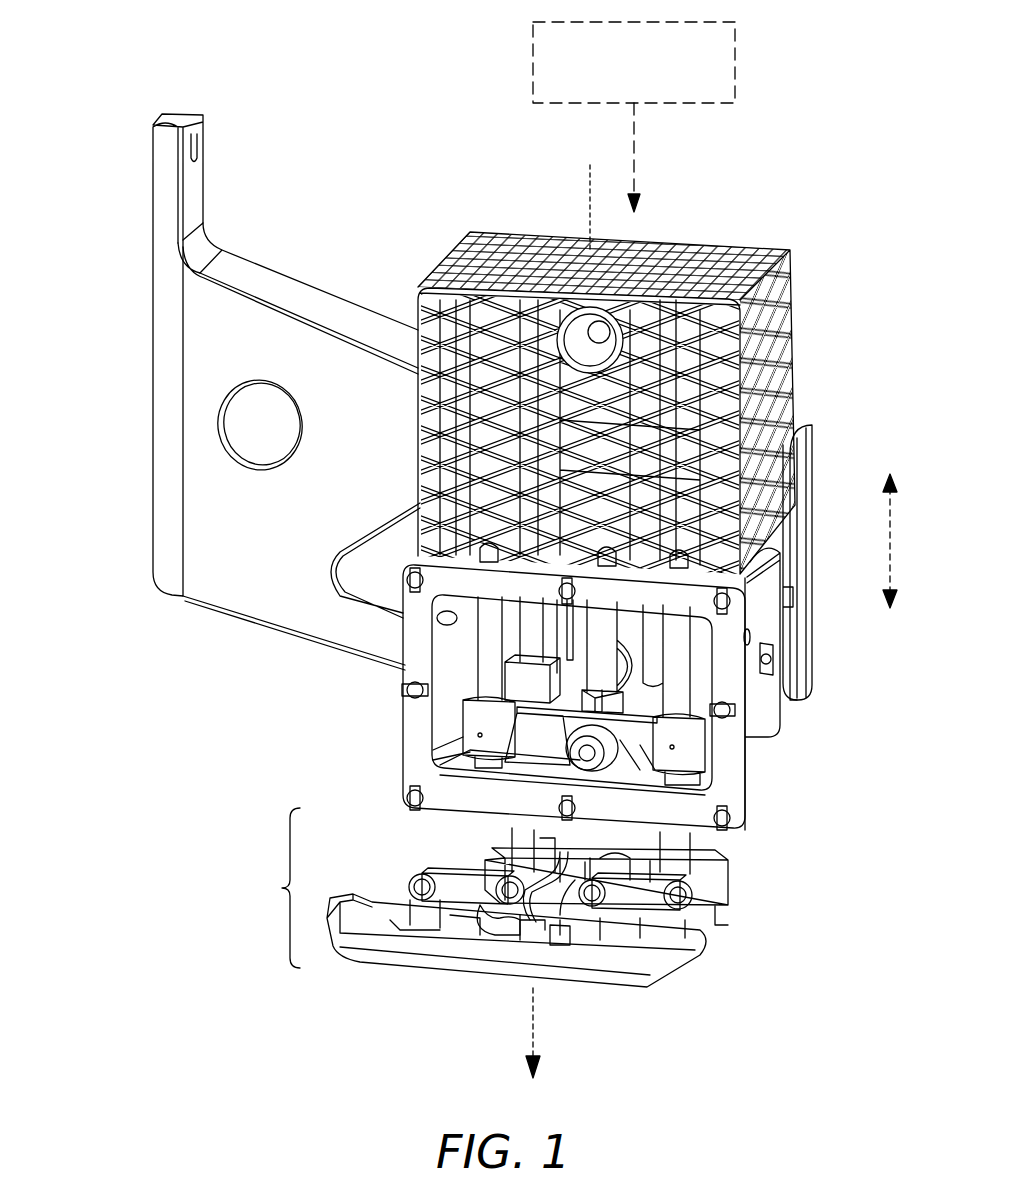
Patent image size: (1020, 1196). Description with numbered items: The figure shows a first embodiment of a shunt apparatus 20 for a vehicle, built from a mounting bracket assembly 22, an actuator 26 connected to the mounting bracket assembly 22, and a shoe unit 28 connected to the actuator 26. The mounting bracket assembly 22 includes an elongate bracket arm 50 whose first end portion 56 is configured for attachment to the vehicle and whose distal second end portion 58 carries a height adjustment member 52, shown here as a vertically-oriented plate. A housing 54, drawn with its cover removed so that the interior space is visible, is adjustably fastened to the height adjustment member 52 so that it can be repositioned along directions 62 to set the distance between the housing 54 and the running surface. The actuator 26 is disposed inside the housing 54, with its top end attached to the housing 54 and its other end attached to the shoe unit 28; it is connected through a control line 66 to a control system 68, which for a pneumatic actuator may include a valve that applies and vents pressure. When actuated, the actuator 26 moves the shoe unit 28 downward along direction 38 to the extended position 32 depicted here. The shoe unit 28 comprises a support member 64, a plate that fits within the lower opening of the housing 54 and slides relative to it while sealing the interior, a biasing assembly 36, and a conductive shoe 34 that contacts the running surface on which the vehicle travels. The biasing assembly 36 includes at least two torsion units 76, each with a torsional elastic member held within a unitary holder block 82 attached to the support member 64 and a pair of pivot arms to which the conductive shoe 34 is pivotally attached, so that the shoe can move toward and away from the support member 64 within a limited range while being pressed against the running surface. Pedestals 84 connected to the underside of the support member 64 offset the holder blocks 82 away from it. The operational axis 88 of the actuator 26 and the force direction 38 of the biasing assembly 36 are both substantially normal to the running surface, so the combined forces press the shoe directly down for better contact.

The shunt apparatus 20 is at (115, 138).
The mounting bracket assembly 22 is at (252, 392).
The actuator 26 is at (800, 456).
The shoe unit 28 is at (276, 888).
The extended position 32 is at (529, 921).
The conductive shoe 34 is at (665, 978).
The biasing assembly 36 is at (517, 931).
The direction 38 is at (535, 1016).
The elongate bracket arm 50 is at (285, 335).
The height adjustment member 52 is at (808, 503).
The housing 54 is at (410, 713).
The first end portion 56 is at (152, 174).
The second end portion 58 is at (382, 330).
The directions 62 is at (892, 553).
The support member 64 is at (636, 788).
The control line 66 is at (633, 132).
The control system 68 is at (533, 60).
The torsion units 76 is at (458, 892).
The unitary holder block 82 is at (424, 893).
The pedestals 84 is at (680, 833).
The operational axis 88 is at (590, 190).